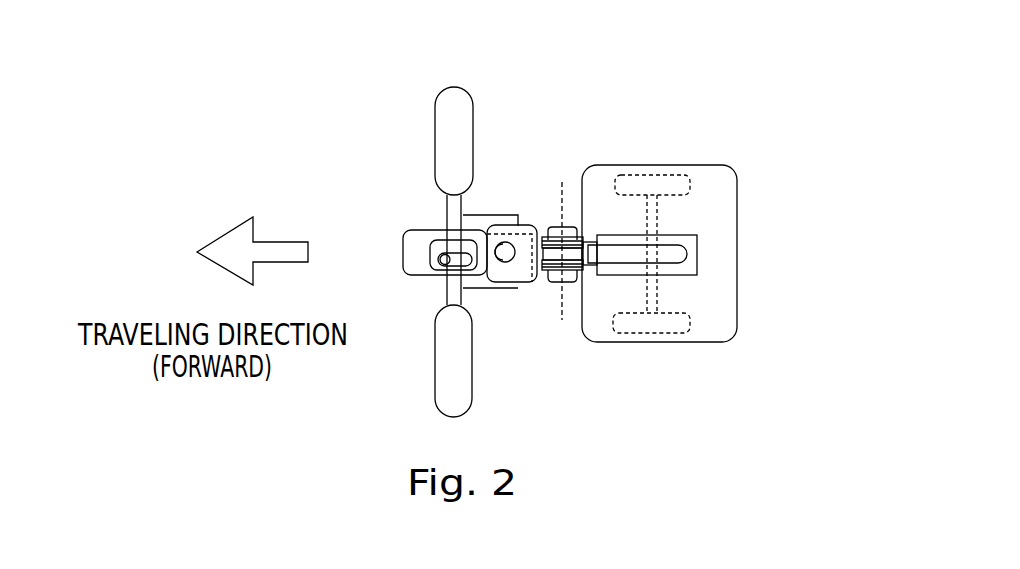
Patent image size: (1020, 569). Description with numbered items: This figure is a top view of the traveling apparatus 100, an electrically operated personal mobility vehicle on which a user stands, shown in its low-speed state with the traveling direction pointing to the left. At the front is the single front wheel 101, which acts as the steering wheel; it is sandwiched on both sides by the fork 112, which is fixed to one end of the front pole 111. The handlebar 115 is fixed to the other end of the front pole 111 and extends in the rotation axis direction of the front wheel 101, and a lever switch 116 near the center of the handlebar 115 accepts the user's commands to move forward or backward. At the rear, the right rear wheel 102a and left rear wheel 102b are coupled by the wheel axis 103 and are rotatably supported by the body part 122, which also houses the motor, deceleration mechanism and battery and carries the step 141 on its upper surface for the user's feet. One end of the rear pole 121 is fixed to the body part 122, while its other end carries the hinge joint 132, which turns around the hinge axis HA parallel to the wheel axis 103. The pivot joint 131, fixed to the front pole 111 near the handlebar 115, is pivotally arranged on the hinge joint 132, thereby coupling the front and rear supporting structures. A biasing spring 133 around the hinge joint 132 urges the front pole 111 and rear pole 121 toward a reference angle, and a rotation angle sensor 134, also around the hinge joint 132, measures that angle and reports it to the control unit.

The traveling apparatus 100 is at (396, 58).
The front wheel 101 is at (407, 230).
The right rear wheel 102a is at (652, 165).
The left rear wheel 102b is at (647, 342).
The wheel axis 103 is at (657, 212).
The front pole 111 is at (503, 263).
The fork 112 is at (480, 213).
The handlebar 115 is at (445, 203).
The lever switch 116 is at (434, 275).
The rear pole 121 is at (597, 233).
The body part 122 is at (687, 253).
The pivot joint 131 is at (524, 225).
The hinge joint 132 is at (552, 283).
The biasing spring 133 is at (547, 227).
The rotation angle sensor 134 is at (574, 281).
The step 141 is at (718, 332).
The hinge axis HA is at (563, 222).